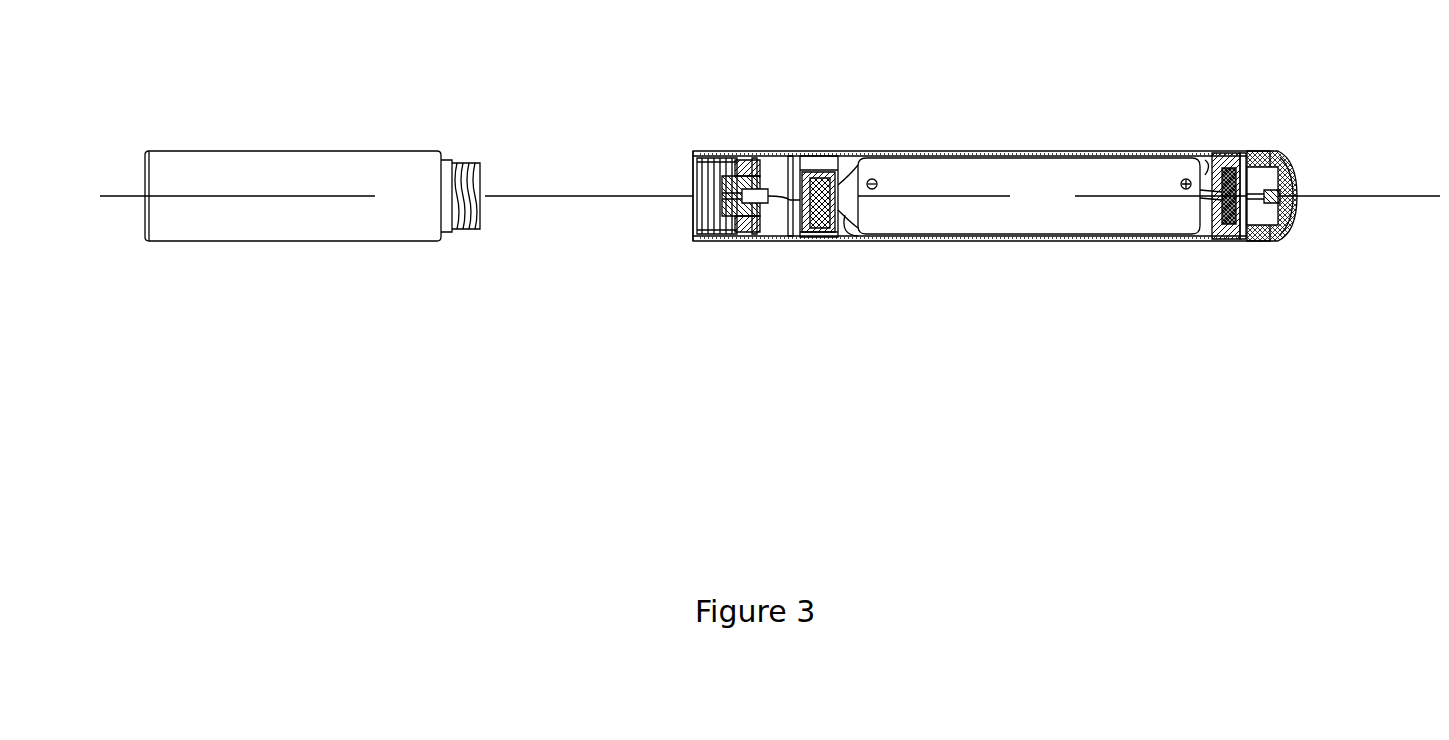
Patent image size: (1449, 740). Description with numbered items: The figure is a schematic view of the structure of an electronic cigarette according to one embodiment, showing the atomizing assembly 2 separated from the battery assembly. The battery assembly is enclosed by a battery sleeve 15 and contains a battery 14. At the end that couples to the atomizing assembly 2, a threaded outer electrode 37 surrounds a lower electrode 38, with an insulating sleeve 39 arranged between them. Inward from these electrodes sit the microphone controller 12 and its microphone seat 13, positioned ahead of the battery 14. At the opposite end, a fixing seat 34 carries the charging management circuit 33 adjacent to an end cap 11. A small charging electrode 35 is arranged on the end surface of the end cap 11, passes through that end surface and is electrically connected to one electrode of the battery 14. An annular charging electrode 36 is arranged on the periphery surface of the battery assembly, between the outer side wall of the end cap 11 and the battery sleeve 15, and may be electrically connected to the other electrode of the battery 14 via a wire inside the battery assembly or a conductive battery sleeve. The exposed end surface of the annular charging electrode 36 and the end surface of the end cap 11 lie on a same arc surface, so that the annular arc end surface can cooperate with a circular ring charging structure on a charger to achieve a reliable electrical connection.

The atomizing assembly 2 is at (296, 213).
The end cap 11 is at (1293, 158).
The microphone controller 12 is at (820, 237).
The microphone seat 13 is at (815, 162).
The battery 14 is at (1052, 210).
The battery sleeve 15 is at (1062, 153).
The charging management circuit 33 is at (1230, 158).
The fixing seat 34 is at (1214, 156).
The small charging electrode 35 is at (1293, 205).
The annular charging electrode 36 is at (1271, 241).
The threaded outer electrode 37 is at (705, 240).
The lower electrode 38 is at (742, 236).
The insulating sleeve 39 is at (745, 160).